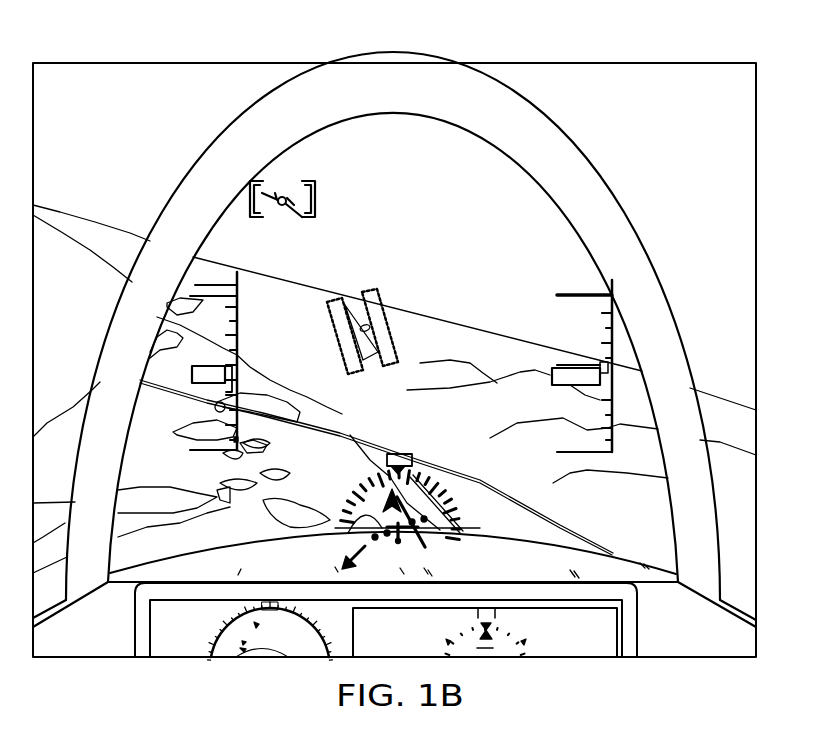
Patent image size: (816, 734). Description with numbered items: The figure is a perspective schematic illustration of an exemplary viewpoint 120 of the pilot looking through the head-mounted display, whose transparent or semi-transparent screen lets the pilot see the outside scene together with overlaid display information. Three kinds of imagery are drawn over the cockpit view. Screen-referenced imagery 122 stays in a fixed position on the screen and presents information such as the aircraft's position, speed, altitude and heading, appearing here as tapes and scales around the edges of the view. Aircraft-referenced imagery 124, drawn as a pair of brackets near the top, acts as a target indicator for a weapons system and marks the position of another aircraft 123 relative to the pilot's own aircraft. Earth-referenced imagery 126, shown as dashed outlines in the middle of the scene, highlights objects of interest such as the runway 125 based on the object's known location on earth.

The viewpoint 120 is at (626, 44).
The screen-referenced imagery 122 is at (260, 347).
The another aircraft 123 is at (284, 198).
The aircraft-referenced imagery 124 is at (313, 194).
The runway 125 is at (370, 355).
The earth-referenced imagery 126 is at (355, 378).